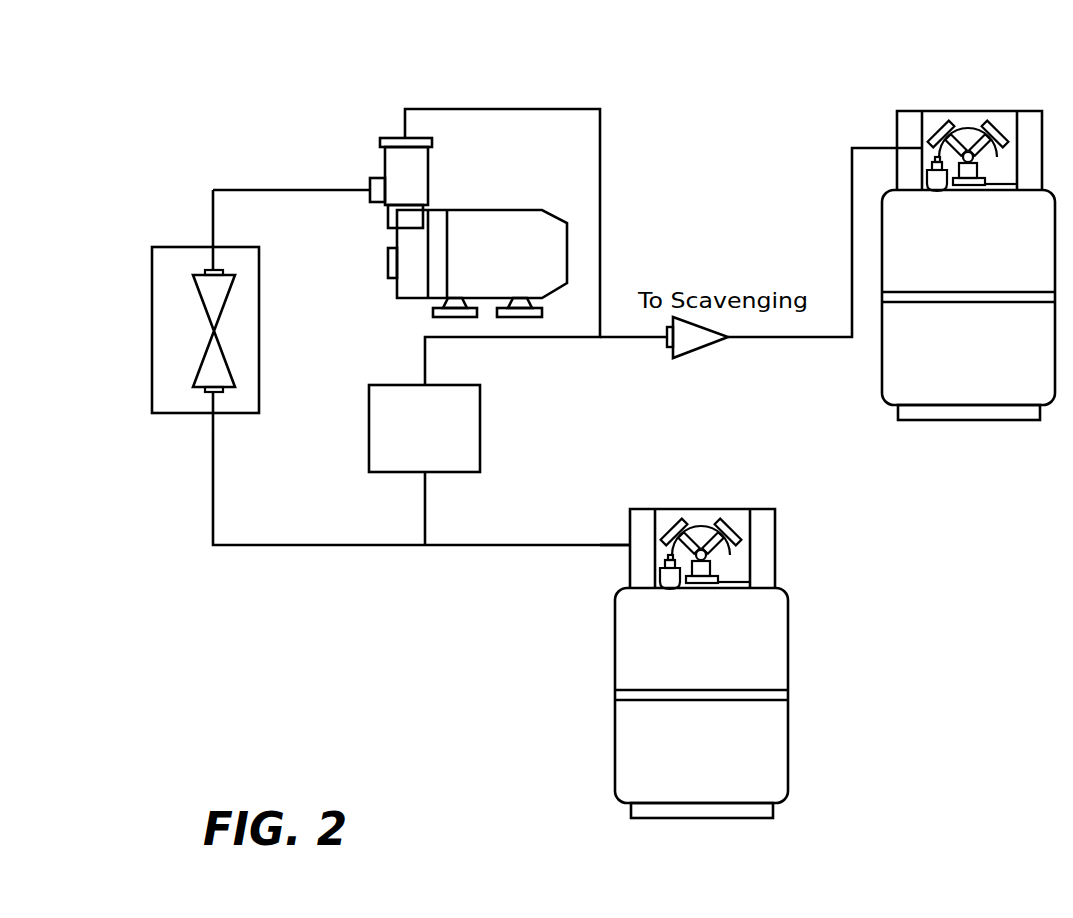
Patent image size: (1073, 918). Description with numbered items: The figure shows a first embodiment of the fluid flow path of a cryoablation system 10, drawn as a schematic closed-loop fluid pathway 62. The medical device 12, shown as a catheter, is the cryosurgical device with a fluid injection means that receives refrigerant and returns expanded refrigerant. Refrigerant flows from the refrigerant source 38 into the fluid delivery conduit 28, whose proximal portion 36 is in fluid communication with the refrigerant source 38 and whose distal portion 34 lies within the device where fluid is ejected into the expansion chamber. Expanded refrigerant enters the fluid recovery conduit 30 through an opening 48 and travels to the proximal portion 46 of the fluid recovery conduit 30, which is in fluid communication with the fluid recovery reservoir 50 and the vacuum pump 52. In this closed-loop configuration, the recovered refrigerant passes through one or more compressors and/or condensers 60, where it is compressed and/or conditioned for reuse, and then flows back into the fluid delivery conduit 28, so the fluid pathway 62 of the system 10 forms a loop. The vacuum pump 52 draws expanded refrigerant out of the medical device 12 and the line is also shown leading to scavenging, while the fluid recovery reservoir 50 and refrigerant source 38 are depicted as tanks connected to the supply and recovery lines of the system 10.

The cryoablation system 10 is at (204, 84).
The medical device 12 is at (189, 341).
The fluid delivery conduit 28 is at (367, 546).
The fluid recovery conduit 30 is at (313, 190).
The distal portion of the fluid delivery conduit 34 is at (213, 413).
The proximal portion of the fluid delivery conduit 36 is at (612, 545).
The refrigerant source 38 is at (980, 262).
The proximal portion of the fluid recovery conduit 46 is at (891, 148).
The opening 48 is at (213, 247).
The fluid recovery reservoir 50 is at (717, 661).
The vacuum pump 52 is at (512, 282).
The compressors and/or condensers 60 is at (439, 441).
The fluid pathway 62 is at (203, 558).